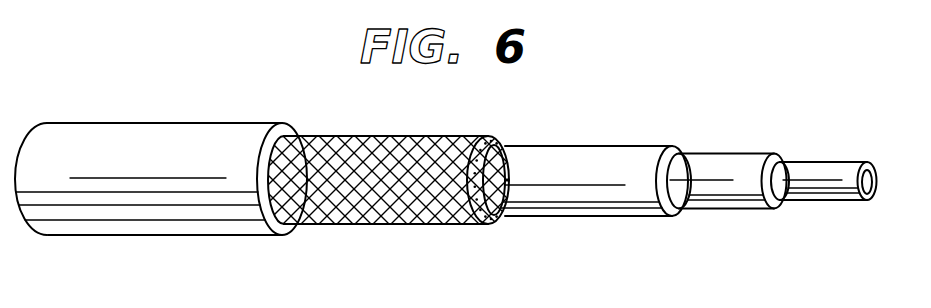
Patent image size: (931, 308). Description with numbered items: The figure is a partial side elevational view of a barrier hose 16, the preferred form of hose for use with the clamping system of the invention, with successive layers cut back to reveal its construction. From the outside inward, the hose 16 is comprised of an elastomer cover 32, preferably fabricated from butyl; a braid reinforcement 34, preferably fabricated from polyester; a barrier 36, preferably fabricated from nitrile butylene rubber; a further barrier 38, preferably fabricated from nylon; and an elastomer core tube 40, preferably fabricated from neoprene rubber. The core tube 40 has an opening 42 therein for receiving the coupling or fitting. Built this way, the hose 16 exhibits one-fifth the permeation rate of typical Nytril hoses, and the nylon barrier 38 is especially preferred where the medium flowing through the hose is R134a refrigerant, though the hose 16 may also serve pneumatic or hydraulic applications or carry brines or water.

The hose 16 is at (554, 119).
The elastomer cover 32 is at (137, 236).
The braid reinforcement 34 is at (417, 225).
The barrier 36 is at (617, 217).
The barrier 38 is at (740, 210).
The elastomer core tube 40 is at (849, 202).
The opening 42 is at (873, 181).